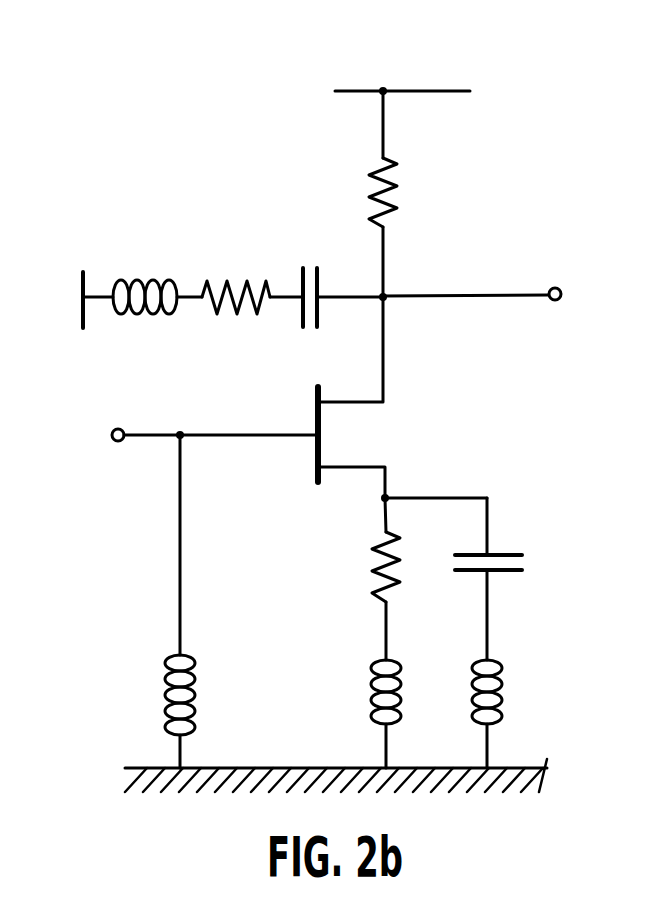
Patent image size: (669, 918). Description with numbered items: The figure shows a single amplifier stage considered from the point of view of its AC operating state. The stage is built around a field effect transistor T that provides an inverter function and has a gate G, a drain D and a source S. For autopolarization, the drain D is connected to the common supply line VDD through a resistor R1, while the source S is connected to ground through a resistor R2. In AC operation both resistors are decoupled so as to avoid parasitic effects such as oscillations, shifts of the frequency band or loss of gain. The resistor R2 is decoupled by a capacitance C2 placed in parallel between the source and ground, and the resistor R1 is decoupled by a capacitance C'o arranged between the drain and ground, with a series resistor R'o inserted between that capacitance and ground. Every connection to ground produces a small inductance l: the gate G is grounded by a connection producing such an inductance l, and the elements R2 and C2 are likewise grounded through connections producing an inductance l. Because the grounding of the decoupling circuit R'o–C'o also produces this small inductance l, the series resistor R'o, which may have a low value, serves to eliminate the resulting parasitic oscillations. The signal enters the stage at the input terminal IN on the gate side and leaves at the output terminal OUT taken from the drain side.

The field effect transistor T is at (366, 397).
The gate G is at (303, 418).
The drain D is at (375, 392).
The source S is at (398, 467).
The resistor R1 is at (404, 227).
The resistor R2 is at (364, 550).
The capacitance C2 is at (510, 546).
The series resistor R'o is at (223, 276).
The capacitance C'o is at (326, 273).
The small inductance l is at (307, 501).
The input terminal IN is at (196, 456).
The output terminal OUT is at (506, 308).
The common supply line VDD is at (402, 107).